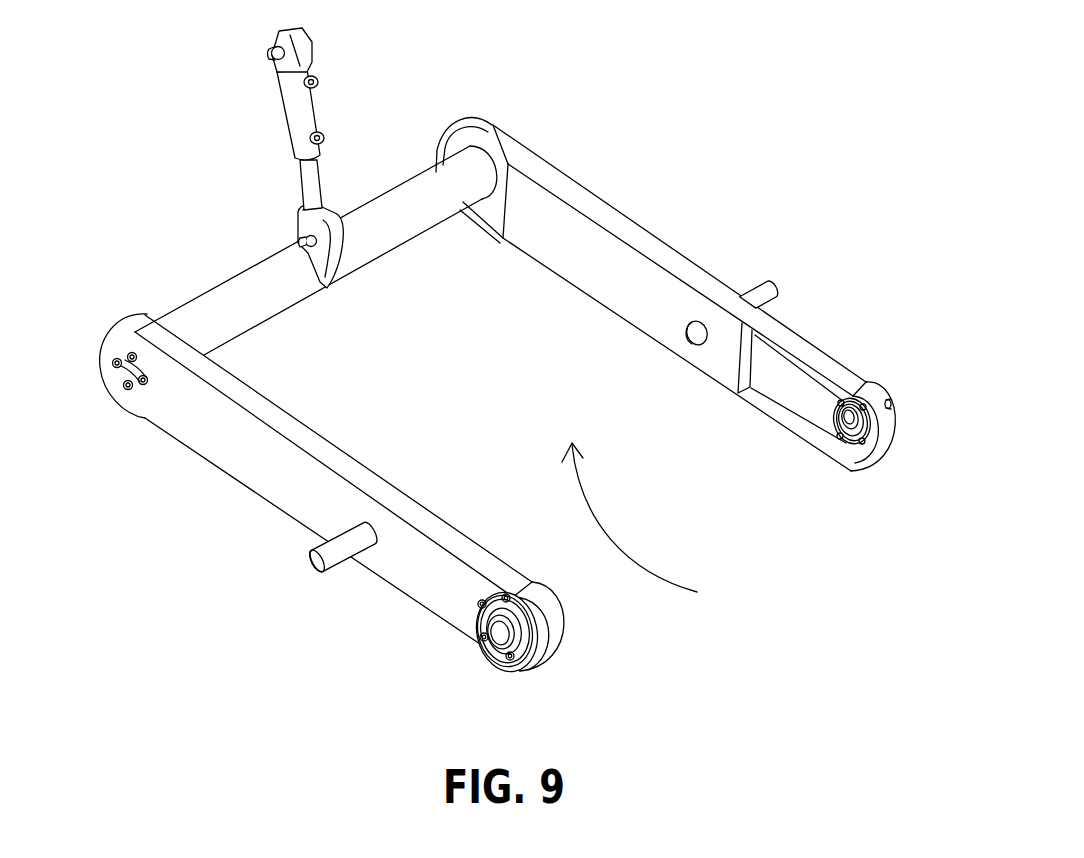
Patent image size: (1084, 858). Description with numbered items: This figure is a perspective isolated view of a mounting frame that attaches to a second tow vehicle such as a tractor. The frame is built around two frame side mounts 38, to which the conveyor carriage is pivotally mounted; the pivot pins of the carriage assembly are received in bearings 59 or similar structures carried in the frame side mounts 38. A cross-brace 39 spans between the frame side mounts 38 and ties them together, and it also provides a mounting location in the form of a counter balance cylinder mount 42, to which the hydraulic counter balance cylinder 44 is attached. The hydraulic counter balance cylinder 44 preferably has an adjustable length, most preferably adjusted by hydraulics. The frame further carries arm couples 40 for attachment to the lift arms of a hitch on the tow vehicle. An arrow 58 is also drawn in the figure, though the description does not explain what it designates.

The frame side mounts 38 is at (648, 253).
The cross-brace 39 is at (442, 190).
The arm couples 40 is at (776, 283).
The counter balance cylinder mount 42 is at (350, 258).
The hydraulic counter balance cylinder 44 is at (300, 108).
The direction arrow 58 is at (644, 523).
The bearings 59 is at (847, 446).